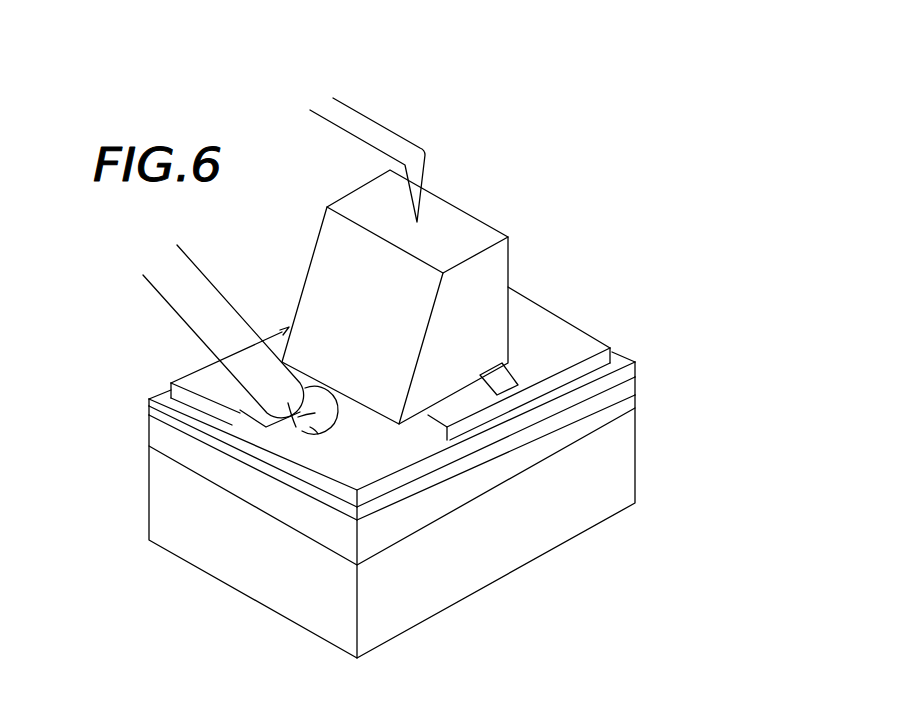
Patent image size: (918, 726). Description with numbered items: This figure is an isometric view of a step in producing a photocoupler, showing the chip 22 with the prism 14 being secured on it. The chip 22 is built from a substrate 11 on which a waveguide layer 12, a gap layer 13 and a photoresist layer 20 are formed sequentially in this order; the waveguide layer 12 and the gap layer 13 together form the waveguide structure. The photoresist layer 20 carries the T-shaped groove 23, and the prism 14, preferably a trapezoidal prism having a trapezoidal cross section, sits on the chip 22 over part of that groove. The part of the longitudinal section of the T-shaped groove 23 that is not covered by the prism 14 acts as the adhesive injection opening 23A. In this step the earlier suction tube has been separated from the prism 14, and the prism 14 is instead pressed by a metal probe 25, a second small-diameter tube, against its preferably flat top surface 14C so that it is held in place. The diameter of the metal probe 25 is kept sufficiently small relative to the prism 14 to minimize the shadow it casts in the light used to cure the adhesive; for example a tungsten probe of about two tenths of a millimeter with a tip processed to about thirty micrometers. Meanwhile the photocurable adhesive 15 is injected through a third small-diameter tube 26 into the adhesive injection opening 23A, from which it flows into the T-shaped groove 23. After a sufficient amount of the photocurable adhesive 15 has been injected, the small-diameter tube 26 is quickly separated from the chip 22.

The substrate 11 is at (625, 468).
The waveguide layer 12 is at (637, 395).
The gap layer 13 is at (627, 362).
The prism 14 is at (422, 281).
The top surface 14C is at (452, 218).
The photocurable adhesive 15 is at (313, 430).
The photoresist layer 20 is at (570, 338).
The chip 22 is at (447, 466).
The T-shaped groove 23 is at (475, 399).
The adhesive injection opening 23A is at (353, 413).
The metal probe 25 is at (370, 130).
The third small-diameter tube 26 is at (223, 313).